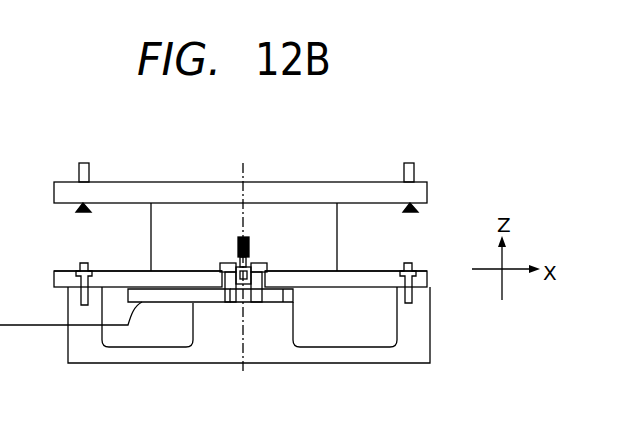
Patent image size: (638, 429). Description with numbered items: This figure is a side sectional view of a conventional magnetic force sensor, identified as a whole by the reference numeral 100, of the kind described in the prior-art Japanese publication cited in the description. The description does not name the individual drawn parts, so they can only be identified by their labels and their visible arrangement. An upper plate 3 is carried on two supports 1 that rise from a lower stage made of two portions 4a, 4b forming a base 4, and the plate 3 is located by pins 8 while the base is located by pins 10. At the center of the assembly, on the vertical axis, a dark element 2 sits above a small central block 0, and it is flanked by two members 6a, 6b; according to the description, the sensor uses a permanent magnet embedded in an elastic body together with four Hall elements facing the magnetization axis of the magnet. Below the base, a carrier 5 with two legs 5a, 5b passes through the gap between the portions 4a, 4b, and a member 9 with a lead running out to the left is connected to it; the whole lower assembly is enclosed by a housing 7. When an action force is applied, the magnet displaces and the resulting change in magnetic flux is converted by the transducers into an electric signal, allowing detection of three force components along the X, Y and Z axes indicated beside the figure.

The stage device 100 is at (493, 153).
The top plate 3 is at (346, 185).
The positioning pins 8 is at (78, 177).
The support columns 1 is at (337, 229).
The guide pins 10 is at (80, 266).
The drive element 2 is at (241, 237).
The center block 0 is at (251, 262).
The left elastic member 6a is at (222, 263).
The right elastic member 6b is at (267, 263).
The left base portion 4a is at (220, 272).
The right base portion 4b is at (270, 272).
The base 4 is at (354, 287).
The moving body 5 is at (294, 298).
The left leg 5a is at (227, 304).
The right leg 5b is at (258, 304).
The wiring member 9 is at (163, 305).
The housing 7 is at (214, 355).